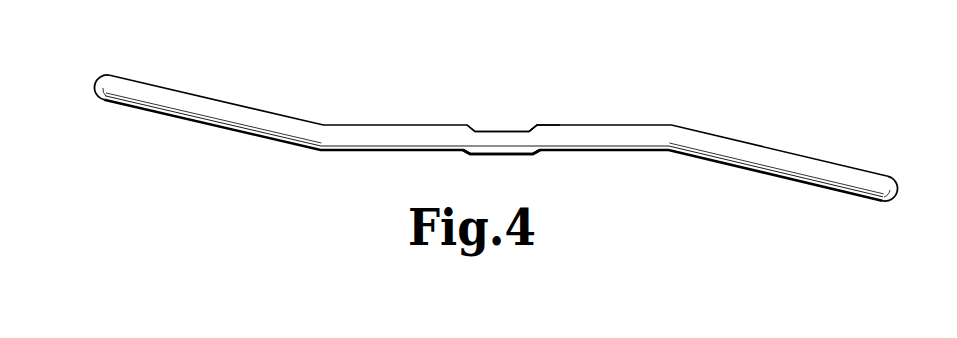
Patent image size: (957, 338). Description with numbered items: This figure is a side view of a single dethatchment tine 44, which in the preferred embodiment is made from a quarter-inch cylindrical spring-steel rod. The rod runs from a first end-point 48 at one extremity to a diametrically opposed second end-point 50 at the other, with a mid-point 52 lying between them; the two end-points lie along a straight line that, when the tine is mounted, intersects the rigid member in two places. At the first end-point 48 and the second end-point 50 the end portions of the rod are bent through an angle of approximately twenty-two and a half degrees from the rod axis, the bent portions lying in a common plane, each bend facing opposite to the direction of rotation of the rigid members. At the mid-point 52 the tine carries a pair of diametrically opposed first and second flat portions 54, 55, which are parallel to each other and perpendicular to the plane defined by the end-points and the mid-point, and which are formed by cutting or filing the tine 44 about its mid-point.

The dethatchment tine 44 is at (772, 166).
The first end-point 48 is at (894, 192).
The second end-point 50 is at (101, 77).
The mid-point 52 is at (503, 136).
The first flat portion 54 is at (521, 128).
The second flat portion 55 is at (523, 153).